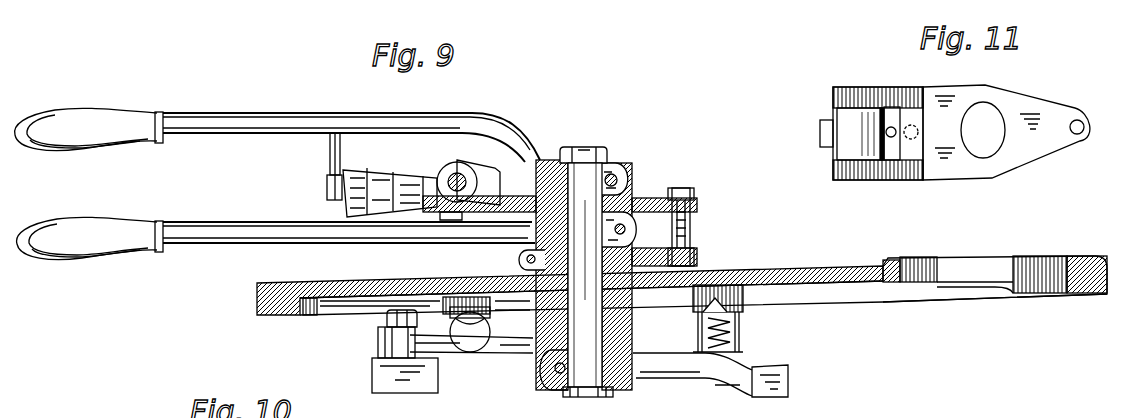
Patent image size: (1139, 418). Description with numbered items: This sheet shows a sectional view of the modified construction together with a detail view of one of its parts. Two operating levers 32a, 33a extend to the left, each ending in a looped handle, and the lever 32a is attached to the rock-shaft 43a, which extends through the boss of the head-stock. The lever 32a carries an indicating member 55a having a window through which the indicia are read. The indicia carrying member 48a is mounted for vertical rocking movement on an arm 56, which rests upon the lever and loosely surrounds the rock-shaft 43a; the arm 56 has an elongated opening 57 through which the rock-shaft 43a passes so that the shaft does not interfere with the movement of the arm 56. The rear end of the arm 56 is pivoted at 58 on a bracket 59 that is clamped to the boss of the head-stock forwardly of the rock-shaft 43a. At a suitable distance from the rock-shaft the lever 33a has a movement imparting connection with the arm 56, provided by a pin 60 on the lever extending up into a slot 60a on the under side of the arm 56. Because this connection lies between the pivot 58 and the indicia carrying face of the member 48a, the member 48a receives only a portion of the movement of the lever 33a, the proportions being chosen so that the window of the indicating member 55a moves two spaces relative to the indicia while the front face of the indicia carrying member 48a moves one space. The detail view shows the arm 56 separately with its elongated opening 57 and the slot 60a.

In FIG. 9, the lever 32a is at (252, 118).
In FIG. 9, the lever 33a is at (220, 233).
In FIG. 9, the indicating member 55a is at (330, 183).
In FIG. 9, the indicia carrying member 48a is at (428, 178).
In FIG. 9, the arm 56 is at (497, 208).
In FIG. 11, the arm 56 is at (947, 172).
In FIG. 9, the slot 60a is at (540, 165).
In FIG. 11, the slot 60a is at (911, 125).
In FIG. 9, the rock-shaft 43a is at (612, 162).
In FIG. 9, the pivot 58 is at (690, 192).
In FIG. 9, the bracket 59 is at (700, 254).
In FIG. 9, the pin 60 is at (508, 240).
In FIG. 11, the elongated opening 57 is at (995, 114).